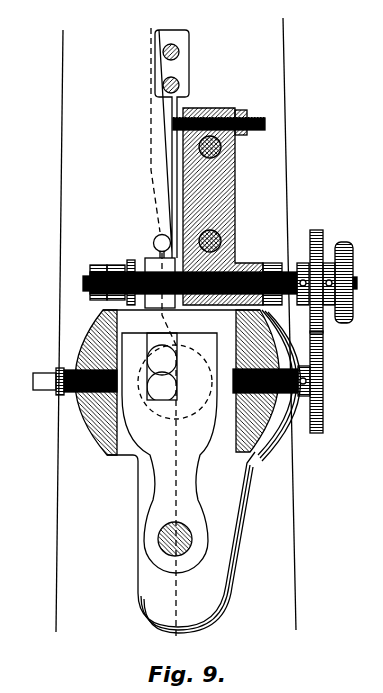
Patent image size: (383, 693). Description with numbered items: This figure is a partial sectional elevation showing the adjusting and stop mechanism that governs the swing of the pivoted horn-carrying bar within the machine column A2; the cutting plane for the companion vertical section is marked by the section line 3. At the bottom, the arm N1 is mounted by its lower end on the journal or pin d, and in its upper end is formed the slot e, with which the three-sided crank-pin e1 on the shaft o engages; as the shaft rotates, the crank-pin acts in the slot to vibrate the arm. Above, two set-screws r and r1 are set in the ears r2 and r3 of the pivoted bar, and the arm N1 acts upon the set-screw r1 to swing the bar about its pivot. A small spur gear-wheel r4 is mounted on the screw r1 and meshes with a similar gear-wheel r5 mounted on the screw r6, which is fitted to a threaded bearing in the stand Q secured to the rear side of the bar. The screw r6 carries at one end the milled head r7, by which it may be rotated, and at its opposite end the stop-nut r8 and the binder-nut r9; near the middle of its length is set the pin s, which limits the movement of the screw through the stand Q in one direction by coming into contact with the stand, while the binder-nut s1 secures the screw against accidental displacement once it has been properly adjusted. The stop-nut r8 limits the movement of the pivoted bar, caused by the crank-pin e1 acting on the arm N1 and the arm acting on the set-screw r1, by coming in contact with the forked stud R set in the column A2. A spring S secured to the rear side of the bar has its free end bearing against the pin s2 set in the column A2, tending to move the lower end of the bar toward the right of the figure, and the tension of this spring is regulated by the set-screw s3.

The section line 3 3 is at (165, 334).
The column A2 is at (176, 325).
The spring S is at (166, 201).
The stand Q is at (236, 244).
The set-screw s3 is at (247, 124).
The forked stud R is at (150, 264).
The pin s2 is at (157, 239).
The pin s is at (178, 261).
The binder-nut r9 is at (97, 267).
The stop-nut r8 is at (126, 268).
The binder-nut s1 is at (270, 266).
The screw r6 is at (292, 272).
The spur gear-wheel r5 is at (320, 236).
The milled head r7 is at (348, 282).
The ear r2 is at (88, 356).
The ear r3 is at (282, 412).
The set-screw r is at (75, 377).
The set-screw r1 is at (232, 347).
The spur gear-wheel r4 is at (323, 358).
The arm N1 is at (169, 453).
The slot e is at (162, 355).
The shaft o is at (175, 382).
The crank-pin e1 is at (162, 387).
The journal or pin d is at (163, 541).